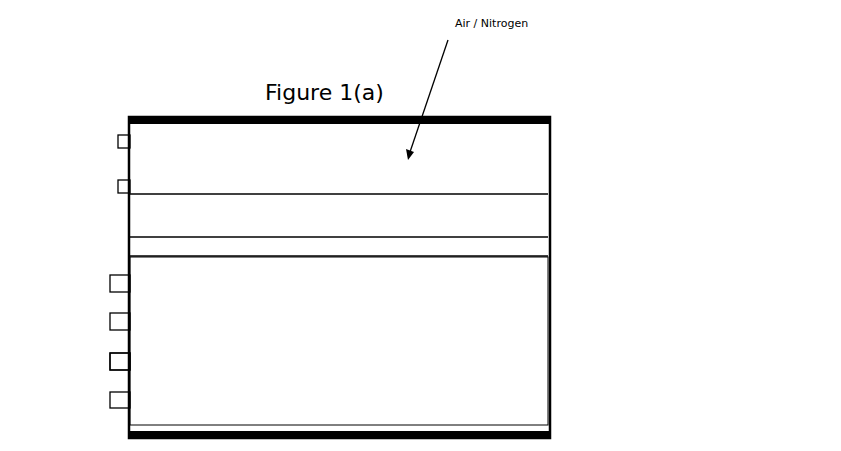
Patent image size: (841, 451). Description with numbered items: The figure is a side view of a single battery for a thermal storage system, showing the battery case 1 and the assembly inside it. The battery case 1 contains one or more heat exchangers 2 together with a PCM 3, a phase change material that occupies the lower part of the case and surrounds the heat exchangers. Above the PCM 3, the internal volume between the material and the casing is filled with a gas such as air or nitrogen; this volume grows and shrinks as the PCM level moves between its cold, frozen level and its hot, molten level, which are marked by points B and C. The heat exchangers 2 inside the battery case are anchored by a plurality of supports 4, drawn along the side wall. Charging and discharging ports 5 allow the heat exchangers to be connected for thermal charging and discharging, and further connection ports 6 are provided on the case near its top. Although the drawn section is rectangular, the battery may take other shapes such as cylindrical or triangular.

The battery case 1 is at (550, 137).
The heat exchanger 2 is at (509, 332).
The PCM 3 is at (600, 273).
The supports 4 is at (132, 338).
The charging and discharging ports 5 is at (58, 430).
The connection ports 6 is at (109, 149).